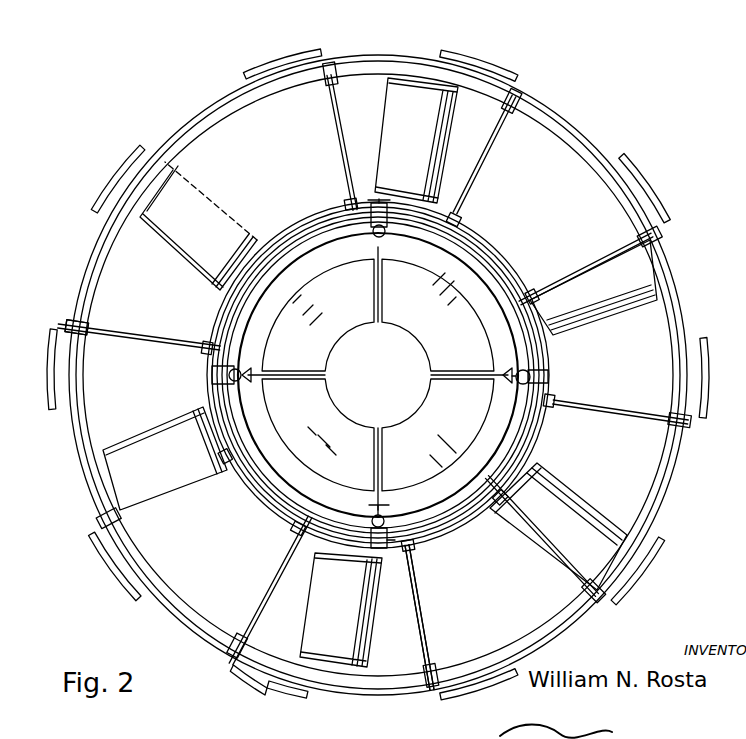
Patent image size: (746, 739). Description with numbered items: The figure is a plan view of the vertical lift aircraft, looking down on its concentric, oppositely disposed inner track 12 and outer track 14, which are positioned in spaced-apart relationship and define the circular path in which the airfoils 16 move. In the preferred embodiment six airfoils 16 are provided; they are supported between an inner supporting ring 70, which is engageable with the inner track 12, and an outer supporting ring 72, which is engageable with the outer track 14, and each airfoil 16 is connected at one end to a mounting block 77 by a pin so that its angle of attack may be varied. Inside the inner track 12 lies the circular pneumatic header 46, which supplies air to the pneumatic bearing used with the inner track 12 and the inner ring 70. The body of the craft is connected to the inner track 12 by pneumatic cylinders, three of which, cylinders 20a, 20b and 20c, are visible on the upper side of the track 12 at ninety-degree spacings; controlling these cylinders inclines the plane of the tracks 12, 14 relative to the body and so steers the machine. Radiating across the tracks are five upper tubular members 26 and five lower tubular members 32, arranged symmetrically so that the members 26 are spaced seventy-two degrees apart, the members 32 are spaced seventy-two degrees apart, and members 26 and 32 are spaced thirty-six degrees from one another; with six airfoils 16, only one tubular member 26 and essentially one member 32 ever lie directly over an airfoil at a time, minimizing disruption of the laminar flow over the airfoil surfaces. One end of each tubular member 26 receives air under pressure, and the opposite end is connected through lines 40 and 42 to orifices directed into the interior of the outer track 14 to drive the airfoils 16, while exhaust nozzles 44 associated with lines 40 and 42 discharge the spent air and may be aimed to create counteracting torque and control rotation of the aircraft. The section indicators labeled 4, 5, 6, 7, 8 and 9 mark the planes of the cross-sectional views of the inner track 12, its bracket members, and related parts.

The section line 4- 4 is at (270, 304).
The section line 5- 5 is at (330, 499).
The section line 6- 6 is at (507, 390).
The section line 7-7 / mounting bracket 7 is at (112, 172).
The section line 8- 8 is at (55, 322).
The section line 9- 9 is at (408, 642).
The inner track 12 is at (505, 260).
The outer track 14 is at (532, 98).
The airfoils 16 is at (387, 108).
The pneumatic cylinder 20a is at (386, 232).
The pneumatic cylinder 20b is at (398, 540).
The pneumatic cylinder 20c is at (212, 370).
The tubular members 26 is at (158, 338).
The tubular members 32 is at (415, 603).
The line 40 is at (112, 567).
The line 42 is at (277, 697).
The exhaust nozzles 44 is at (320, 697).
The pneumatic header 46 is at (312, 222).
The inner supporting ring 70 is at (487, 238).
The outer supporting ring 72 is at (522, 114).
The mounting block 77 is at (536, 463).